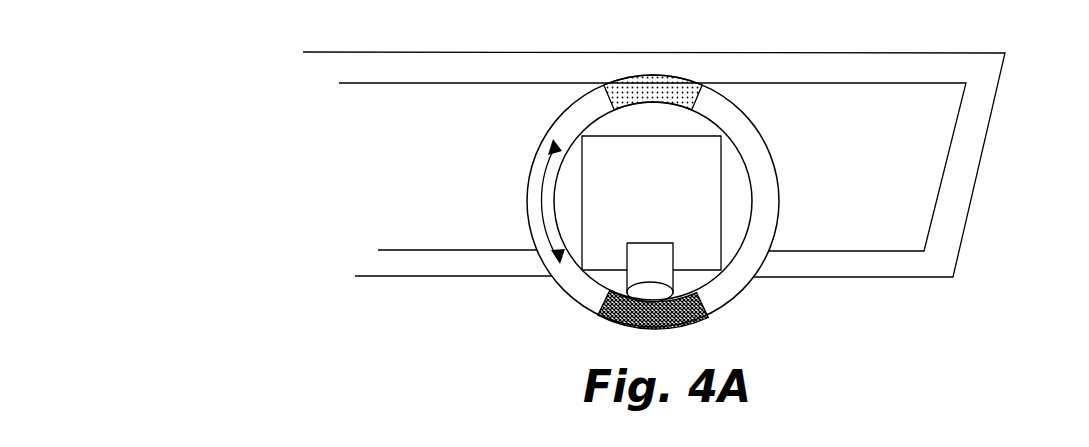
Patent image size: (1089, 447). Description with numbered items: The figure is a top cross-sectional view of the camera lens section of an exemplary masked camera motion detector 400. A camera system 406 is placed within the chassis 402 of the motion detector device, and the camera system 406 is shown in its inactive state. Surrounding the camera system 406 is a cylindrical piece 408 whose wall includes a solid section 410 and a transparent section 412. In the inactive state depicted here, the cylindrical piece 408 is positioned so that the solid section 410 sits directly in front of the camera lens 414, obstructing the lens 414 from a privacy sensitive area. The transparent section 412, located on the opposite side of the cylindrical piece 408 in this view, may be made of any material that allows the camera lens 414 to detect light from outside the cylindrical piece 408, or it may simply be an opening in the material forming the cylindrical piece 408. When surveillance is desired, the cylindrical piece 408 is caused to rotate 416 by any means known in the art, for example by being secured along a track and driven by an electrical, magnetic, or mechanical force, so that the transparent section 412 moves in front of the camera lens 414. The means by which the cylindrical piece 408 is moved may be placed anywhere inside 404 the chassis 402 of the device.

The masked camera motion detector 400 is at (140, 134).
The chassis 402 is at (341, 170).
The inside of the chassis 404 is at (652, 167).
The camera system 406 is at (651, 203).
The cylindrical piece 408 is at (760, 168).
The solid section 410 is at (690, 322).
The transparent section 412 is at (652, 79).
The camera lens 414 is at (655, 292).
The rotation 416 is at (541, 222).